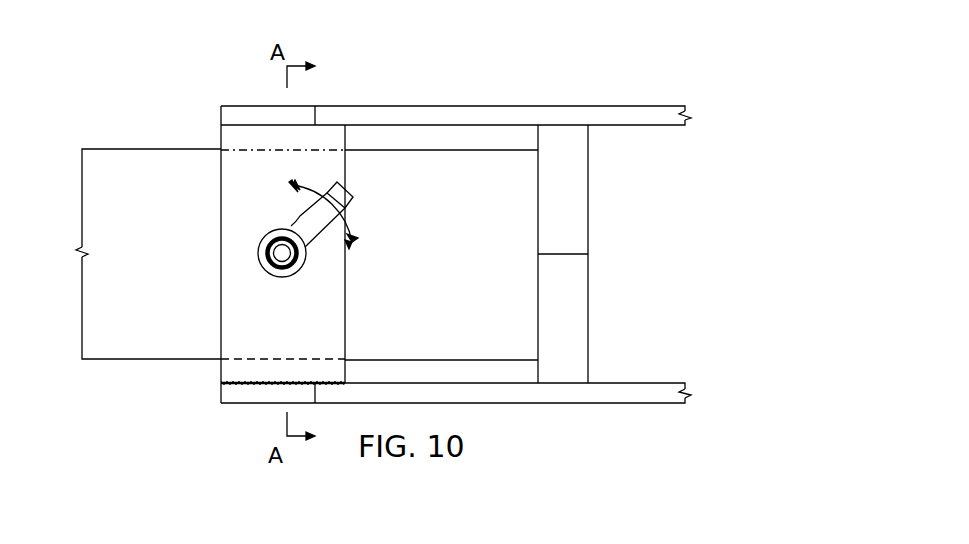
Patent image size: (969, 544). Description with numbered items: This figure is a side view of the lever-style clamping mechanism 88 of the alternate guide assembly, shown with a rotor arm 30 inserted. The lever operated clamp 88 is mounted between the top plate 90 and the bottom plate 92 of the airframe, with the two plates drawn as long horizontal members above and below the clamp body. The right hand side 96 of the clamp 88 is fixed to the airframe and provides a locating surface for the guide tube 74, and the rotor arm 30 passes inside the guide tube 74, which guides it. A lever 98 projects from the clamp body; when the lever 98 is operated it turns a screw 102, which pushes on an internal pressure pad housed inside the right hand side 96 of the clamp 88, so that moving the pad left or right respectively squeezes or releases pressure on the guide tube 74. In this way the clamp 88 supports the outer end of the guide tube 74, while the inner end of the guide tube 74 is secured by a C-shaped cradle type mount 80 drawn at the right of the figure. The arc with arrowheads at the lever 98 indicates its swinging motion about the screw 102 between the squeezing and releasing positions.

The rotor arm 30 is at (102, 359).
The guide tube 74 is at (465, 150).
The C-shaped cradle 80 is at (588, 224).
The lever operated clamp 88 is at (221, 137).
The top plate 90 is at (648, 106).
The bottom plate 92 is at (677, 383).
The right hand side of the clamp 96 is at (221, 369).
The lever 98 is at (353, 198).
The screw 102 is at (300, 265).